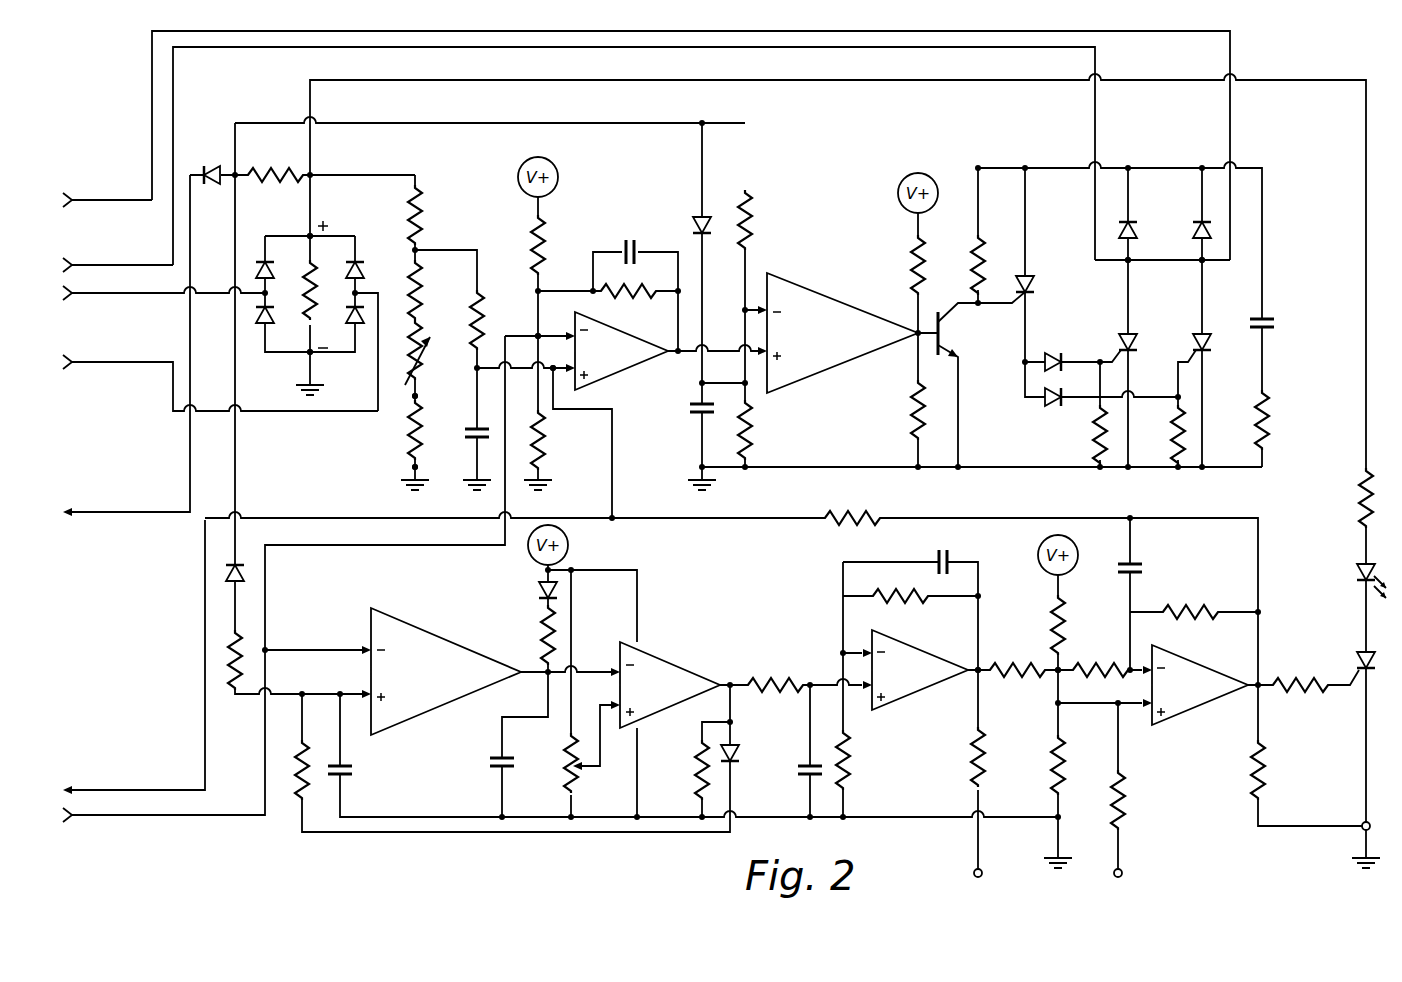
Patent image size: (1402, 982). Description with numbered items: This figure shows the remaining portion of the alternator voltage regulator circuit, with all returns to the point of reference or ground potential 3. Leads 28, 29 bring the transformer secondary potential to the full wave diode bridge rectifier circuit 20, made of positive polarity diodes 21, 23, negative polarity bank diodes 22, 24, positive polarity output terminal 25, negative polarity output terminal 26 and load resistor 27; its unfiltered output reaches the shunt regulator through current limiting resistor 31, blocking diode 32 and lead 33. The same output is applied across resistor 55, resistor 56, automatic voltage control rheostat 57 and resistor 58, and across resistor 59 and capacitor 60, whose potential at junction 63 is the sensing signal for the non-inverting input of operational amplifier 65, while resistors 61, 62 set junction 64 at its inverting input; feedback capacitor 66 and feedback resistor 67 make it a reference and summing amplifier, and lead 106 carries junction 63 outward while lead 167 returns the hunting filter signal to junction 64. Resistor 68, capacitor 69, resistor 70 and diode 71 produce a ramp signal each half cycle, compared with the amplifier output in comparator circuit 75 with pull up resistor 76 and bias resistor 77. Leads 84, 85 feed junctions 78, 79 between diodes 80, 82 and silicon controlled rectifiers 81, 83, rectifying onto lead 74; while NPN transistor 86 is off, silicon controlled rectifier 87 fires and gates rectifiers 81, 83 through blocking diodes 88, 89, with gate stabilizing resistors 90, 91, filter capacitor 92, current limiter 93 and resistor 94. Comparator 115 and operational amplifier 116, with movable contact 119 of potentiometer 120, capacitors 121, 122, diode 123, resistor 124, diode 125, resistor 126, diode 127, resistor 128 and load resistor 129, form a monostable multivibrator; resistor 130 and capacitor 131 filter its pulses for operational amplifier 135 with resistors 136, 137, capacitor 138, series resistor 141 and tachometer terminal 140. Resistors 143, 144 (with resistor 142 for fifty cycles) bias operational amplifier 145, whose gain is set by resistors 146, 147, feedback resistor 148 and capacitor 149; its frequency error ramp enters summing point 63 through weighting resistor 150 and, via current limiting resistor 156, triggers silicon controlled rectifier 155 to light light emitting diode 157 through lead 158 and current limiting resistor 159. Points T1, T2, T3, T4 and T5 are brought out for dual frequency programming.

The point of reference or ground potential 3 is at (320, 387).
The full wave diode bridge rectifier circuit 20 is at (318, 233).
The positive polarity diode 21 is at (270, 272).
The negative polarity bank diode 22 is at (262, 323).
The positive polarity diode 23 is at (358, 266).
The negative polarity bank diode 24 is at (352, 320).
The positive polarity output terminal 25 is at (308, 236).
The negative polarity output terminal 26 is at (305, 357).
The load resistor 27 is at (308, 290).
The lead 28 is at (95, 293).
The lead 29 is at (95, 362).
The current limiting resistor 31 is at (262, 178).
The blocking diode 32 is at (212, 166).
The lead 33 is at (110, 512).
The resistor 55 is at (420, 200).
The resistor 56 is at (422, 285).
The automatic voltage control rheostat 57 is at (424, 360).
The resistor 58 is at (406, 434).
The resistor 59 is at (480, 315).
The capacitor 60 is at (468, 428).
The resistor 61 is at (532, 245).
The resistor 62 is at (545, 440).
The junction 63 is at (556, 372).
The junction 64 is at (542, 335).
The operational amplifier 65 is at (625, 365).
The feedback capacitor 66 is at (628, 248).
The feedback resistor 67 is at (628, 294).
The resistor 68 is at (750, 208).
The capacitor 69 is at (698, 410).
The resistor 70 is at (750, 430).
The diode 71 is at (698, 222).
The lead 74 is at (1065, 166).
The comparator circuit 75 is at (806, 286).
The pull up resistor 76 is at (912, 250).
The bias resistor 77 is at (912, 410).
The junction 78 is at (1130, 263).
The junction 79 is at (1204, 263).
The diode 80 is at (1132, 222).
The silicon controlled rectifier 81 is at (1125, 333).
The diode 82 is at (1198, 240).
The silicon controlled rectifier 83 is at (1206, 348).
The lead 84 is at (152, 265).
The lead 85 is at (130, 200).
The NPN transistor 86 is at (955, 335).
The silicon controlled rectifier 87 is at (1030, 276).
The blocking diode 88 is at (1055, 352).
The blocking diode 89 is at (1045, 398).
The gate electrode stabilizing resistor 90 is at (1094, 438).
The gate electrode stabilizing resistor 91 is at (1172, 428).
The filter capacitor 92 is at (1270, 323).
The current limiter 93 is at (1268, 418).
The resistor 94 is at (974, 255).
The lead 106 is at (150, 790).
The comparator circuit 115 is at (420, 690).
The operational amplifier 116 is at (662, 665).
The movable contact 119 is at (590, 768).
The potentiometer 120 is at (565, 762).
The capacitor 121 is at (498, 765).
The capacitor 122 is at (348, 772).
The diode 123 is at (738, 750).
The resistor 124 is at (298, 790).
The diode 125 is at (540, 588).
The resistor 126 is at (542, 640).
The diode 127 is at (243, 574).
The resistor 128 is at (232, 660).
The load resistor 129 is at (697, 765).
The resistor 130 is at (775, 680).
The capacitor 131 is at (805, 772).
The operational amplifier 135 is at (902, 702).
The resistor 136 is at (880, 598).
The resistor 137 is at (850, 760).
The capacitor 138 is at (935, 562).
The terminal 140 is at (976, 868).
The series resistor 141 is at (975, 745).
The resistor 142 is at (1122, 805).
The resistor 143 is at (1052, 620).
The resistor 144 is at (1055, 755).
The operational amplifier 145 is at (1197, 710).
The resistor 146 is at (1018, 667).
The resistor 147 is at (1100, 665).
The feedback resistor 148 is at (1190, 610).
The capacitor 149 is at (1135, 565).
The weighting resistor 150 is at (826, 520).
The silicon controlled rectifier 155 is at (1358, 660).
The current limiting resistor 156 is at (1298, 690).
The light emitting diode 157 is at (1360, 570).
The lead 158 is at (520, 80).
The current limiting resistor 159 is at (1362, 498).
The lead 167 is at (105, 815).
The external terminal point T1 is at (418, 396).
The external terminal point T2 is at (413, 468).
The external terminal point T3 is at (978, 665).
The external terminal point T4 is at (1057, 675).
The external terminal point T5 is at (1122, 872).